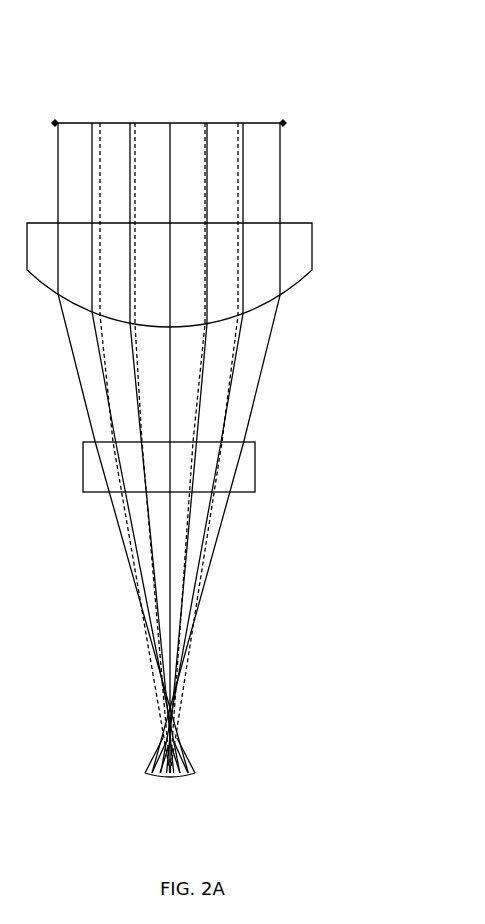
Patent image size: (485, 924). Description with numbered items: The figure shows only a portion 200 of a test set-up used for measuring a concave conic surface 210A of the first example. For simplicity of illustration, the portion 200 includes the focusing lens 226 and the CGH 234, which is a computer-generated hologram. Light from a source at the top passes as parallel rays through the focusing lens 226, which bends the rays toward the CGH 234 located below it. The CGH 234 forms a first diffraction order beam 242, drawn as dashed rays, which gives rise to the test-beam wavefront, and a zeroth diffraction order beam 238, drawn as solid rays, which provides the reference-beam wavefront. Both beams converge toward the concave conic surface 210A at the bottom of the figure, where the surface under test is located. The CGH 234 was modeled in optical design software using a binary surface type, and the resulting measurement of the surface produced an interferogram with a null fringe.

The portion of test set-up 200 is at (364, 58).
The focusing lens 226 is at (320, 242).
The CGH 234 is at (268, 443).
The 0th diffraction order beam 238 is at (168, 542).
The first diffraction order beam 242 is at (197, 655).
The concave conic surface 210A is at (188, 779).